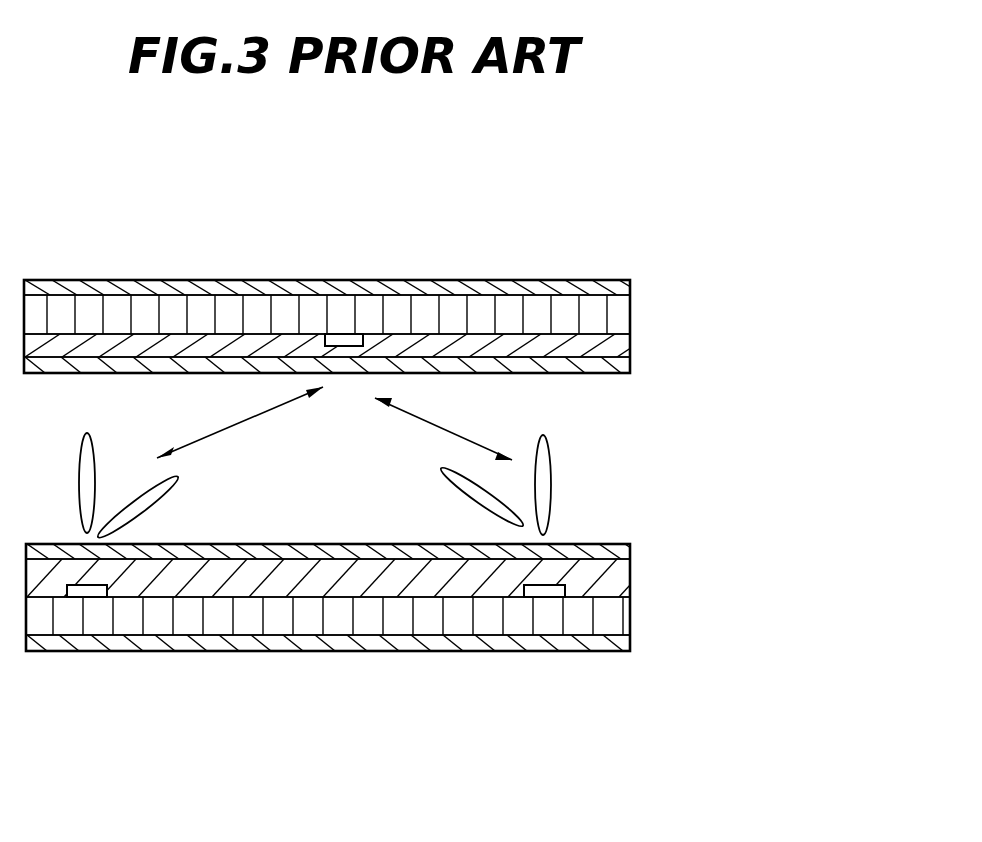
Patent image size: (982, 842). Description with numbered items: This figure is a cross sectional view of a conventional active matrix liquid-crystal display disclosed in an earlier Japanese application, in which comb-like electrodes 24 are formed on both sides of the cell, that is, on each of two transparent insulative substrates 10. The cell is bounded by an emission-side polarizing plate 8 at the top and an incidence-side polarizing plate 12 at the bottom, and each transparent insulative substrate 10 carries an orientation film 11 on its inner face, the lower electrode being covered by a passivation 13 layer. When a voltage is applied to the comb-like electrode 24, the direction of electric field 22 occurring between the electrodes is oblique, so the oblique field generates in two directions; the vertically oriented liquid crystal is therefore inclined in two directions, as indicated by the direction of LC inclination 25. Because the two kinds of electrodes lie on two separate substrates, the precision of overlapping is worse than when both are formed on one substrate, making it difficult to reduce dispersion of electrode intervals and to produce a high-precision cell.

The emission-side polarizing plate 8 is at (510, 289).
The transparent insulative substrate 10 is at (618, 315).
The orientation film 11 is at (592, 546).
The incidence-side polarizing plate 12 is at (535, 652).
The passivation 13 is at (617, 577).
The direction of electric field 22 is at (225, 425).
The comb-like electrode 24 is at (55, 680).
The direction of LC inclination 25 is at (165, 507).